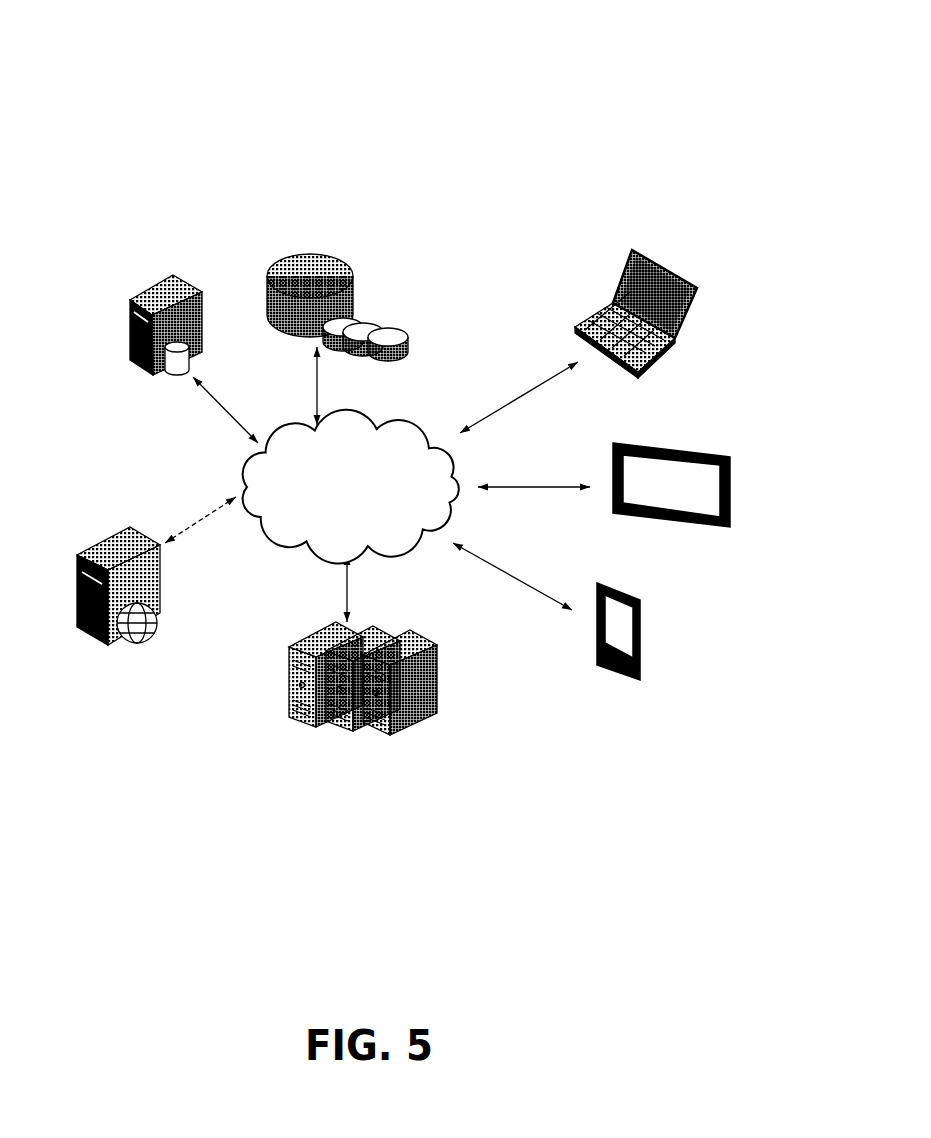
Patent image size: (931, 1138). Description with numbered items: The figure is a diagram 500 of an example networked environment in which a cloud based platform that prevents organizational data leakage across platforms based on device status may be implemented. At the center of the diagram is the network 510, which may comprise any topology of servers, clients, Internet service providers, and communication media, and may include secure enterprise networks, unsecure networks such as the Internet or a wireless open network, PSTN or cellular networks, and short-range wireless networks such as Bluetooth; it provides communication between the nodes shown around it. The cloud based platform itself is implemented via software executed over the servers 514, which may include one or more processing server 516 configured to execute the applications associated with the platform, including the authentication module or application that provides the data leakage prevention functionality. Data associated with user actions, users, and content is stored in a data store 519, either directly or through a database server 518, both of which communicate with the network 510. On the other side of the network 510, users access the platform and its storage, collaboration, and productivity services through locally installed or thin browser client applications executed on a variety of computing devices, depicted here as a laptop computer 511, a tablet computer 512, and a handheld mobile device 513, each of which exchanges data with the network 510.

The diagram 500 is at (588, 43).
The network 510 is at (354, 410).
The laptop computer 511 is at (672, 248).
The tablet computer 512 is at (707, 423).
The mobile phone 513 is at (650, 598).
The servers 514 is at (312, 625).
The processing server 516 is at (96, 531).
The database server 518 is at (167, 388).
The data store 519 is at (328, 227).